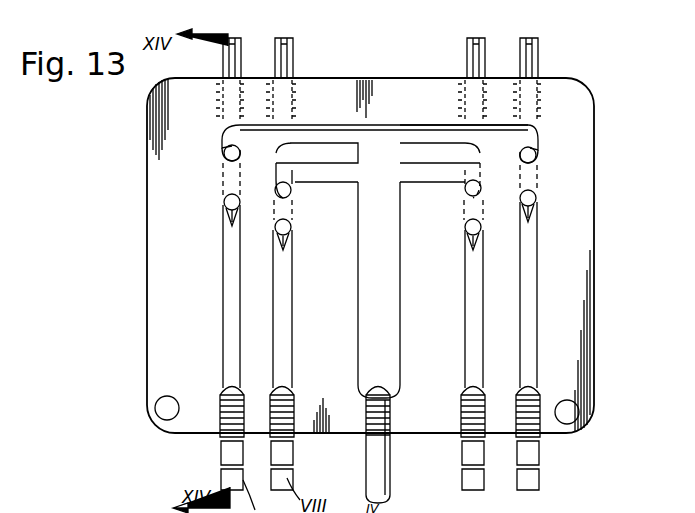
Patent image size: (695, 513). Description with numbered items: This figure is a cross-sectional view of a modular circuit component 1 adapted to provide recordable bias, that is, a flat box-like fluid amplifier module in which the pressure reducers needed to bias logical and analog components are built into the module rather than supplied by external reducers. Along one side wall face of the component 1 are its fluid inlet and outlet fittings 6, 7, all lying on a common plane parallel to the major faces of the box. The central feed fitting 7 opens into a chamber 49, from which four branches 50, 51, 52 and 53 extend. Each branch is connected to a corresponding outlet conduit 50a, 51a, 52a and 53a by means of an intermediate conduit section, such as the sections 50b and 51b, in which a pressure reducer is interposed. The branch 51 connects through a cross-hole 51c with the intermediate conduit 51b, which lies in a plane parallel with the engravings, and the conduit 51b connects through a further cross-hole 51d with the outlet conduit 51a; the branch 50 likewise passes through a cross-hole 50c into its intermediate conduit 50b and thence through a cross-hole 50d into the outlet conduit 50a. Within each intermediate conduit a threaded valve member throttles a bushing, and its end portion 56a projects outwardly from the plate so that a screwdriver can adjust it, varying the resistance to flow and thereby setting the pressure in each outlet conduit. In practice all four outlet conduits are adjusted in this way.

The fluid amplifier modular component 1 is at (598, 262).
The fluid inlet and outlet fittings 6 is at (516, 480).
The fluid inlet and outlet fittings 7 is at (386, 458).
The chamber 49 is at (388, 270).
The branch 50 is at (328, 176).
The outlet conduit 50a is at (293, 354).
The intermediate conduit section 50b is at (296, 216).
The cross-hole 50c is at (280, 197).
The cross-hole 50d is at (302, 240).
The branch 51 is at (331, 128).
The outlet conduit 51a is at (224, 264).
The intermediate conduit section 51b is at (225, 188).
The cross-hole 51c is at (222, 152).
The cross-hole 51d is at (226, 204).
The branch 52 is at (430, 128).
The outlet conduit 52a is at (535, 268).
The branch 53 is at (432, 176).
The outlet conduit 53a is at (468, 318).
The end portion of valve member 56a is at (281, 52).